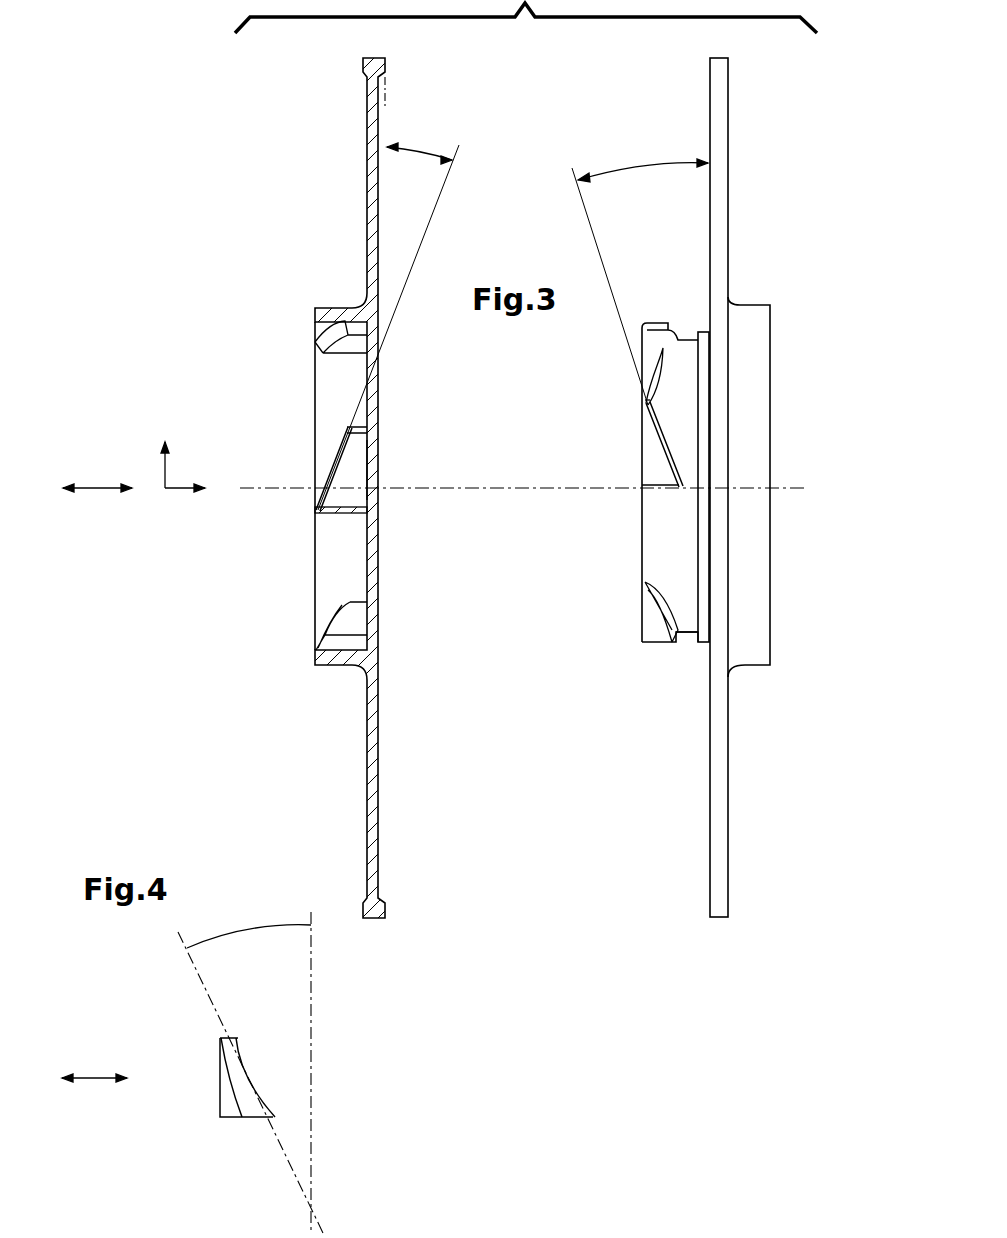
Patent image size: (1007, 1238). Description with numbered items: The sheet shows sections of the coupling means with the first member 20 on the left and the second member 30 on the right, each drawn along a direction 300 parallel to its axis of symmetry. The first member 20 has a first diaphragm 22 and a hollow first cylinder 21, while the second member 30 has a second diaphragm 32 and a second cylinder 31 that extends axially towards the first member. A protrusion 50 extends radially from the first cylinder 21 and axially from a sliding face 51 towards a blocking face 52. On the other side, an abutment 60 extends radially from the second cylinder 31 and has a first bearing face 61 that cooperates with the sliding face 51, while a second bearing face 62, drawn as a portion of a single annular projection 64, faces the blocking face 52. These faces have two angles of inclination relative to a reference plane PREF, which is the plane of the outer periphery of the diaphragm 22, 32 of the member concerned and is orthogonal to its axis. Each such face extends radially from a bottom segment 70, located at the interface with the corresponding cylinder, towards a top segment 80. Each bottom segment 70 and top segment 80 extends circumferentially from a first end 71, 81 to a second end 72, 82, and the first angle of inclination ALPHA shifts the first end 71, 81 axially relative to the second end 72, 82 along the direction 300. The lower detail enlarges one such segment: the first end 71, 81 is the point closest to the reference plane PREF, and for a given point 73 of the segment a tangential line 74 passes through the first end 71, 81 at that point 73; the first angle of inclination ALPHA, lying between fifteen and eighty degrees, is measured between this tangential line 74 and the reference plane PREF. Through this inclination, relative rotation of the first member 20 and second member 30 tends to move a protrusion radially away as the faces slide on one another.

In FIG. 3, the first member 20 is at (414, 881).
In FIG. 3, the first cylinder 21 is at (337, 308).
In FIG. 3, the first diaphragm 22 is at (370, 127).
In FIG. 3, the second member 30 is at (680, 880).
In FIG. 3, the second cylinder 31 is at (675, 390).
In FIG. 3, the second diaphragm 32 is at (730, 135).
In FIG. 3, the protrusion 50 is at (355, 497).
In FIG. 3, the sliding face 51 is at (316, 450).
In FIG. 3, the blocking face 52 is at (372, 469).
In FIG. 3, the abutment 60 is at (672, 448).
In FIG. 3, the first bearing face 61 is at (682, 465).
In FIG. 3, the second bearing face 62 is at (698, 550).
In FIG. 3, the annular projection 64 is at (705, 645).
In FIG. 3, the bottom segment 70 is at (323, 480).
In FIG. 4, the bottom segment 70 is at (237, 1037).
In FIG. 3, the first end of bottom segment 71 is at (348, 428).
In FIG. 4, the first end of bottom segment 71 is at (273, 1117).
In FIG. 3, the second end of bottom segment 72 is at (318, 517).
In FIG. 4, the second end of bottom segment 72 is at (233, 1037).
In FIG. 4, the point of segment 73 is at (247, 1073).
In FIG. 4, the tangential line 74 is at (203, 988).
In FIG. 3, the top segment 80 is at (340, 498).
In FIG. 4, the top segment 80 is at (220, 1088).
In FIG. 3, the first end of top segment 81 is at (357, 440).
In FIG. 4, the first end of top segment 81 is at (242, 1120).
In FIG. 3, the second end of top segment 82 is at (318, 518).
In FIG. 4, the second end of top segment 82 is at (220, 1038).
In FIG. 3, the direction 300 is at (98, 488).
In FIG. 4, the direction 300 is at (93, 1078).
In FIG. 3, the reference plane PREF is at (385, 85).
In FIG. 4, the reference plane PREF is at (311, 1165).
In FIG. 3, the first angle of inclination ALPHA is at (420, 150).
In FIG. 4, the first angle of inclination ALPHA is at (240, 927).